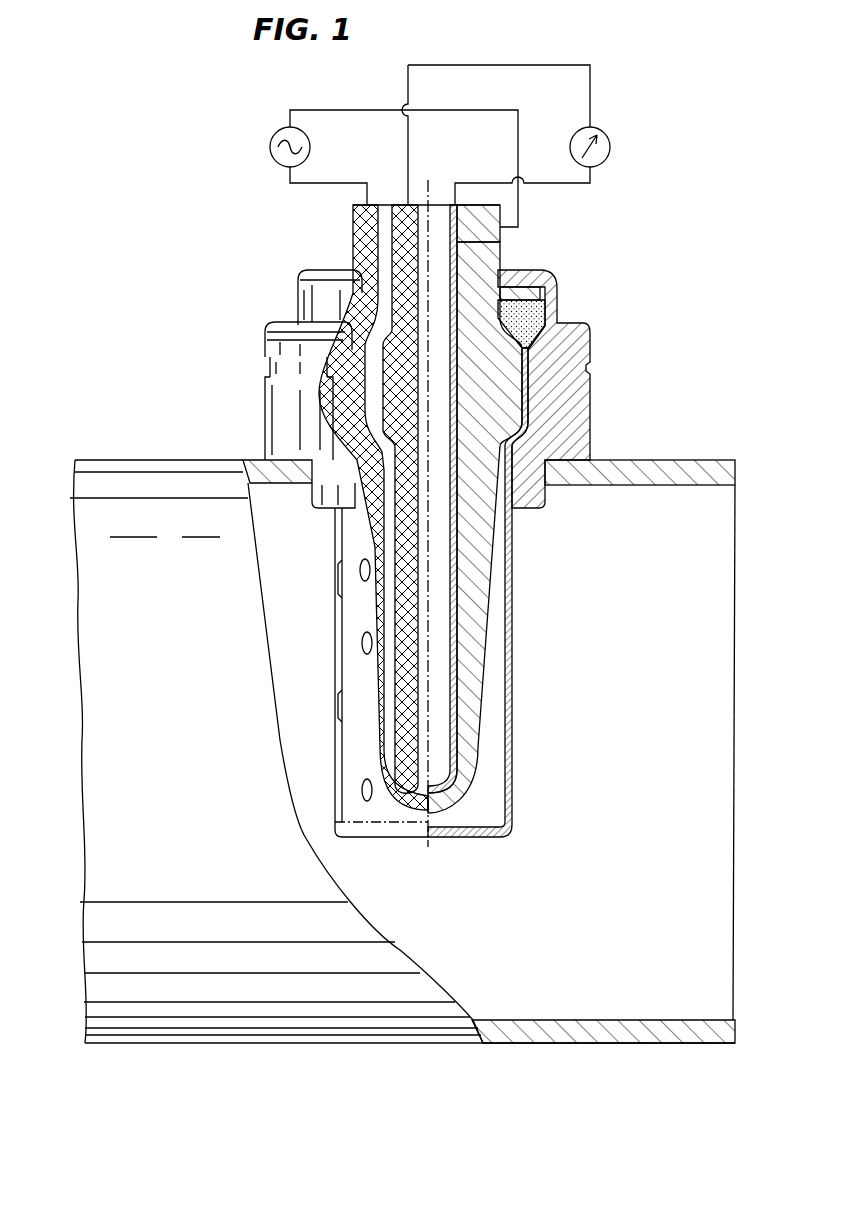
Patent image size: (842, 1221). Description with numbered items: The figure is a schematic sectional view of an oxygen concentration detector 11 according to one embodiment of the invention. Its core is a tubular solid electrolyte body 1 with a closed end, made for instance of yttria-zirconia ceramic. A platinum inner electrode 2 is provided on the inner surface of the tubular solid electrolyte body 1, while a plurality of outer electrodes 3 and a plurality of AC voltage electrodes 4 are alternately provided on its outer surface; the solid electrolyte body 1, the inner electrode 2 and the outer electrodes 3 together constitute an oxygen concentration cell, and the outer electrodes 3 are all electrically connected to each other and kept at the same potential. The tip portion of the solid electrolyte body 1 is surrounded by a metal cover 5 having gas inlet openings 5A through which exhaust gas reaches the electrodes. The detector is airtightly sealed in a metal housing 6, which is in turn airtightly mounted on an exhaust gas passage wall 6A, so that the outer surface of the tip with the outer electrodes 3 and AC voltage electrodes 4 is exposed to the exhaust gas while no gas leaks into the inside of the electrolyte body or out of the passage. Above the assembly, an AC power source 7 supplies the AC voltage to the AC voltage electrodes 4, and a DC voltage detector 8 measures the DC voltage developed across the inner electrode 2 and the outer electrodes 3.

The tubular solid electrolyte body 1 is at (488, 265).
The inner electrode 2 is at (503, 240).
The outer electrodes 3 is at (400, 585).
The AC voltage electrodes 4 is at (382, 708).
The metal cover 5 is at (510, 750).
The gas inlet openings 5A is at (517, 570).
The metal housing 6 is at (577, 406).
The exhaust gas passage wall 6A is at (678, 468).
The AC power source 7 is at (271, 153).
The DC voltage detector 8 is at (610, 147).
The oxygen concentration detector 11 is at (573, 307).